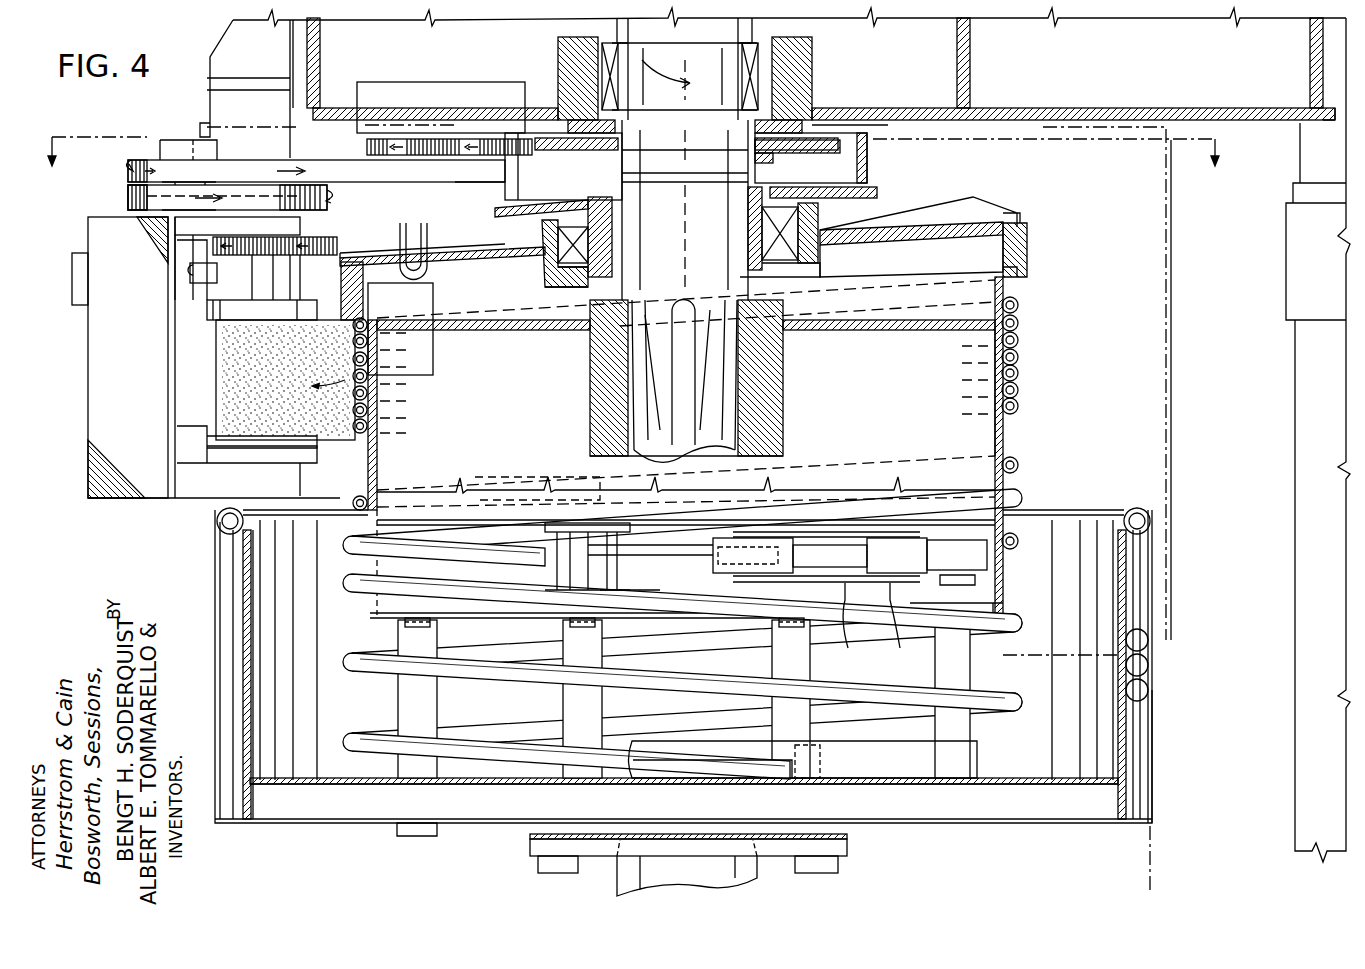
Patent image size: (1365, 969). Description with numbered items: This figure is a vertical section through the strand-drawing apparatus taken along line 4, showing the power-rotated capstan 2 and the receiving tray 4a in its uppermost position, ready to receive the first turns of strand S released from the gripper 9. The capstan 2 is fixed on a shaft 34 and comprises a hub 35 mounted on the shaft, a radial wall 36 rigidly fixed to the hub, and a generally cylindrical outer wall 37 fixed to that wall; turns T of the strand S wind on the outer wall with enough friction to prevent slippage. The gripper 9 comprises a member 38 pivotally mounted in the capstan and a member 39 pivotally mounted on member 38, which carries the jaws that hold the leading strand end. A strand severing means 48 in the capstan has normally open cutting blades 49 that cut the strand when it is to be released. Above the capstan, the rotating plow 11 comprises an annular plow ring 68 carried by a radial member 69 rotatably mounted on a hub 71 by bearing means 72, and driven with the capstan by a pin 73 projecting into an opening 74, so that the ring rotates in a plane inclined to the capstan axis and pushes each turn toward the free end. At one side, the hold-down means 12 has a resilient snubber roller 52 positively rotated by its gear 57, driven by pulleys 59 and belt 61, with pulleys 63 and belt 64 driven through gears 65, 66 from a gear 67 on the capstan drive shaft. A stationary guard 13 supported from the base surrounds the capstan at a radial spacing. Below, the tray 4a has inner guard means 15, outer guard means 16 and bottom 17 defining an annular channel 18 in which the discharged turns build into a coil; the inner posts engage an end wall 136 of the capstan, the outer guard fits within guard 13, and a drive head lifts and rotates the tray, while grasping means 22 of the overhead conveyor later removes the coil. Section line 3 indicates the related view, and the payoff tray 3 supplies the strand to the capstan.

The capstan 2 is at (1005, 436).
The payoff tray 3 is at (632, 166).
The receiving tray 4 is at (1268, 120).
The receiving tray 4a is at (1155, 745).
The gripper 9 is at (904, 626).
The plow 11 is at (1040, 257).
The hold down means 12 is at (155, 500).
The stationary guard 13 is at (1170, 470).
The inner guard means 15 is at (970, 655).
The outer guard means 16 is at (1152, 583).
The bottom 17 is at (1008, 778).
The annular channel 18 is at (1060, 550).
The grasping means 22 is at (740, 748).
The shaft 34 is at (652, 355).
The hub 35 is at (783, 392).
The radial wall 36 is at (893, 330).
The outer wall 37 is at (990, 430).
The gripper member 38 is at (859, 626).
The gripper member 39 is at (725, 578).
The strand severing means 48 is at (632, 583).
The cutting blades 49 is at (565, 585).
The snubber roller 52 is at (236, 366).
The gear 57 is at (323, 255).
The pulley 59 is at (128, 192).
The belt 61 is at (140, 198).
The pulley 63 is at (152, 160).
The belt 64 is at (318, 162).
The gear 65 is at (386, 140).
The gear 66 is at (452, 140).
The gear 67 is at (800, 150).
The plow ring 68 is at (1030, 237).
The radial member 69 is at (940, 226).
The hub 71 is at (598, 200).
The bearing means 72 is at (565, 262).
The pin 73 is at (415, 222).
The opening 74 is at (472, 250).
The end wall 136 is at (362, 600).
The turns T is at (1022, 322).
The strand S is at (1020, 370).